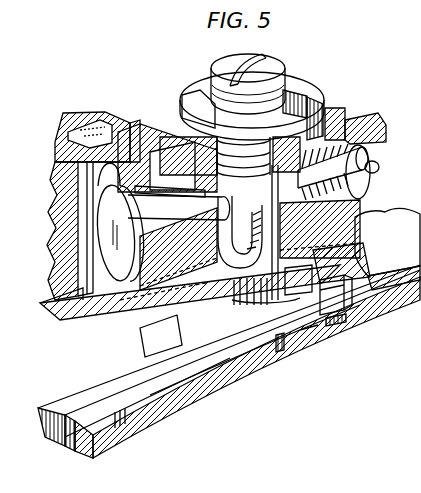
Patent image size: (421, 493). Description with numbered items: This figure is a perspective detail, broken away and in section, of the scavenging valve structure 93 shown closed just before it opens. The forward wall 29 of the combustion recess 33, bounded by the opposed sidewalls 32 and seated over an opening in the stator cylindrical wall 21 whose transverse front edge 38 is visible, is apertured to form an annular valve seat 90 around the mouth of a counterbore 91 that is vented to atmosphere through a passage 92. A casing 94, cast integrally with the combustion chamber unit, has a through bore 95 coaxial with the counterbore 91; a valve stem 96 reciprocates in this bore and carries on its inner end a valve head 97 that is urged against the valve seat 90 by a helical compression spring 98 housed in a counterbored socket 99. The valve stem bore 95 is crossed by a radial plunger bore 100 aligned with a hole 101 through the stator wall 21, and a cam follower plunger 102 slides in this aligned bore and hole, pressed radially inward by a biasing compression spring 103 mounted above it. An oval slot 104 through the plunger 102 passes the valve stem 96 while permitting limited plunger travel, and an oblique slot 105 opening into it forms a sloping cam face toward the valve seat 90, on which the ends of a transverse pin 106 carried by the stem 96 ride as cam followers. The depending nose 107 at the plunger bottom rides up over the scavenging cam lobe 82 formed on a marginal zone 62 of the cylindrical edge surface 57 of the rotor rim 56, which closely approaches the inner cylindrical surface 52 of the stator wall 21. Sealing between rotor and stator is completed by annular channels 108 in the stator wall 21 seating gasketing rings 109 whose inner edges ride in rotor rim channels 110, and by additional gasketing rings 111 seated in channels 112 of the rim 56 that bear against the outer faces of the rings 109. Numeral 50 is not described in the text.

The cylindrical wall 21 is at (373, 237).
The front wall 29 is at (97, 260).
The sidewalls 32 is at (78, 232).
The combustion space or recess 33 is at (101, 123).
The transverse front edge 38 is at (120, 312).
The base plate 50 is at (133, 310).
The inner cylindrical surface 52 is at (147, 322).
The annular rim 56 is at (45, 438).
The cylindrical edge surface 57 is at (313, 327).
The marginal zones 62 is at (143, 358).
The scavenging cam lobe 82 is at (216, 363).
The annular valve seat 90 is at (122, 202).
The counterbore 91 is at (159, 210).
The passage 92 is at (150, 147).
The scavenging valve structure 93 is at (333, 113).
The casing 94 is at (343, 123).
The through bore 95 is at (172, 150).
The valve stem 96 is at (365, 157).
The valve head 97 is at (107, 220).
The helical compression spring 98 is at (367, 180).
The counterbored socket 99 is at (363, 140).
The radial plunger bore 100 is at (290, 275).
The hole 101 is at (212, 292).
The cam follower plunger 102 is at (259, 286).
The biasing compression spring 103 is at (236, 117).
The oval slot 104 is at (188, 242).
The oblique slot 105 is at (110, 303).
The transverse pin 106 is at (182, 112).
The depending nose 107 is at (280, 337).
The annular channels 108 is at (343, 310).
The gasketing rings 109 is at (347, 337).
The rotor rim channels 110 is at (80, 444).
The gasketing rings 111 is at (138, 387).
The channels 112 is at (72, 445).